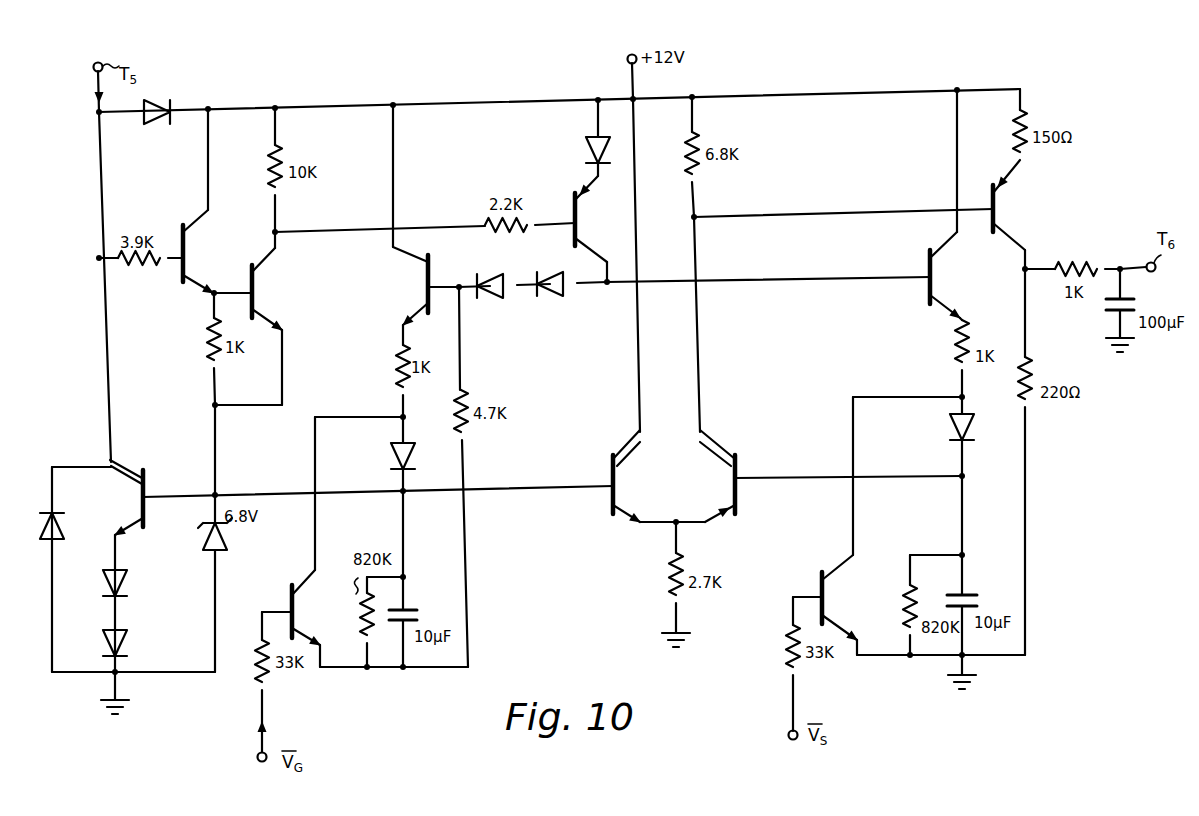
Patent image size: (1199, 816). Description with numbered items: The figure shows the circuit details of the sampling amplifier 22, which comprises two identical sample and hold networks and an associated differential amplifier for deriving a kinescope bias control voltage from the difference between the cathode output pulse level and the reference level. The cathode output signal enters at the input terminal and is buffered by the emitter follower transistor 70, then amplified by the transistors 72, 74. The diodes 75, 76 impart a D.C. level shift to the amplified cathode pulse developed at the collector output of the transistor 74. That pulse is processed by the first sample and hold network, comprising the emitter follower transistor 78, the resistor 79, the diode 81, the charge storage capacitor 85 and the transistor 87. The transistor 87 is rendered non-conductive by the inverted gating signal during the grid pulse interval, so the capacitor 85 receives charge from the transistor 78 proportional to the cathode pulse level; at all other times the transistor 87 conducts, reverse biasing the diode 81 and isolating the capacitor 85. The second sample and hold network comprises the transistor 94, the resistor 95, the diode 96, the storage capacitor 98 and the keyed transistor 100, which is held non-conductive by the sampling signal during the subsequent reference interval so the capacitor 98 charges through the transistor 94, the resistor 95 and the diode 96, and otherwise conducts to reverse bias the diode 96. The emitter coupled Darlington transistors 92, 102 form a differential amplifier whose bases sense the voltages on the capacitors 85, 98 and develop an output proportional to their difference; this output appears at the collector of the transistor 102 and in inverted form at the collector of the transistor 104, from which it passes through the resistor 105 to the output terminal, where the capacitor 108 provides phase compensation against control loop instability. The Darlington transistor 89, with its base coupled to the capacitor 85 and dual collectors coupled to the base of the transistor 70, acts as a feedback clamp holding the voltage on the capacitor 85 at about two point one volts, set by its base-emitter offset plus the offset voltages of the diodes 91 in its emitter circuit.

The sampling amplifier 22 is at (438, 72).
The emitter follower transistor 70 is at (222, 267).
The transistor 72 is at (290, 305).
The transistor 74 is at (615, 233).
The diode 75 is at (500, 297).
The diode 76 is at (560, 295).
The emitter follower transistor 78 is at (418, 301).
The resistor 79 is at (397, 362).
The diode 81 is at (394, 457).
The charge storage capacitor 85 is at (415, 608).
The transistor 87 is at (327, 615).
The Darlington transistor 89 is at (129, 509).
The diodes 91 is at (153, 621).
The Darlington transistor 92 is at (650, 497).
The transistor 94 is at (968, 292).
The resistor 95 is at (946, 357).
The diode 96 is at (944, 426).
The storage capacitor 98 is at (974, 594).
The keyed transistor 100 is at (872, 612).
The Darlington transistor 102 is at (727, 497).
The transistor 104 is at (1045, 223).
The resistor 105 is at (1086, 262).
The capacitor 108 is at (1115, 313).